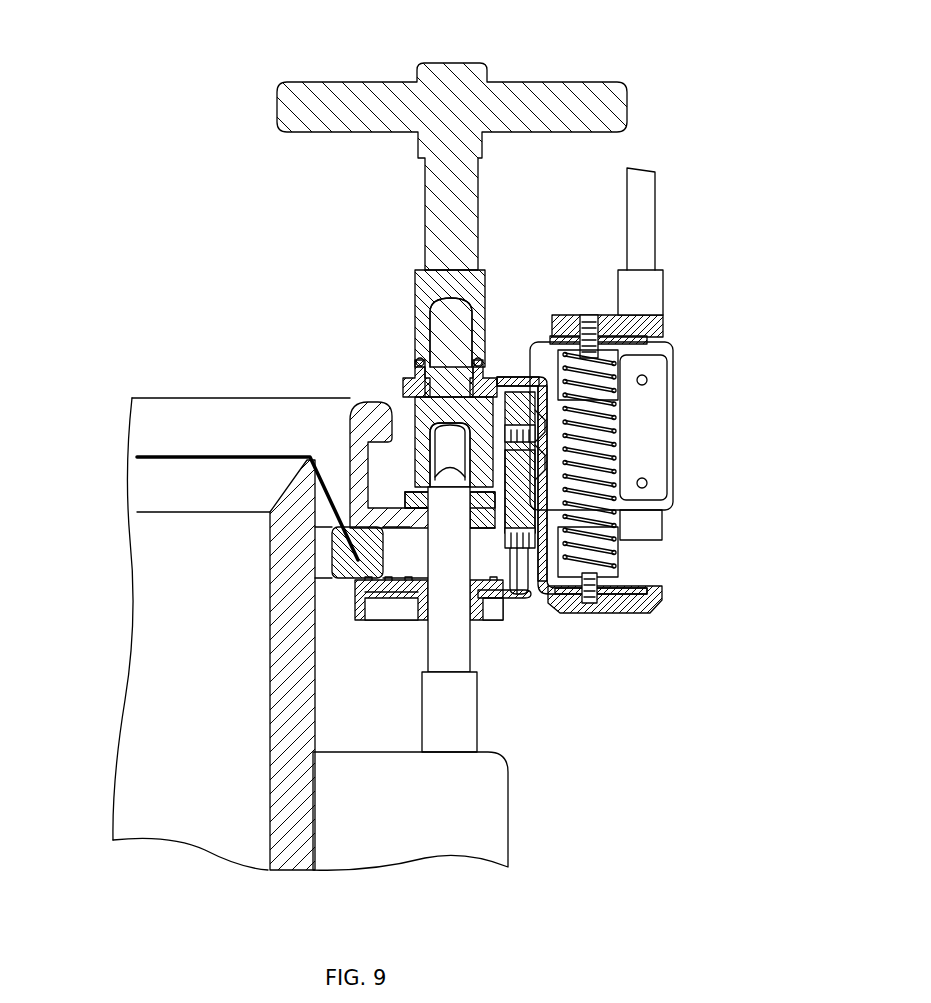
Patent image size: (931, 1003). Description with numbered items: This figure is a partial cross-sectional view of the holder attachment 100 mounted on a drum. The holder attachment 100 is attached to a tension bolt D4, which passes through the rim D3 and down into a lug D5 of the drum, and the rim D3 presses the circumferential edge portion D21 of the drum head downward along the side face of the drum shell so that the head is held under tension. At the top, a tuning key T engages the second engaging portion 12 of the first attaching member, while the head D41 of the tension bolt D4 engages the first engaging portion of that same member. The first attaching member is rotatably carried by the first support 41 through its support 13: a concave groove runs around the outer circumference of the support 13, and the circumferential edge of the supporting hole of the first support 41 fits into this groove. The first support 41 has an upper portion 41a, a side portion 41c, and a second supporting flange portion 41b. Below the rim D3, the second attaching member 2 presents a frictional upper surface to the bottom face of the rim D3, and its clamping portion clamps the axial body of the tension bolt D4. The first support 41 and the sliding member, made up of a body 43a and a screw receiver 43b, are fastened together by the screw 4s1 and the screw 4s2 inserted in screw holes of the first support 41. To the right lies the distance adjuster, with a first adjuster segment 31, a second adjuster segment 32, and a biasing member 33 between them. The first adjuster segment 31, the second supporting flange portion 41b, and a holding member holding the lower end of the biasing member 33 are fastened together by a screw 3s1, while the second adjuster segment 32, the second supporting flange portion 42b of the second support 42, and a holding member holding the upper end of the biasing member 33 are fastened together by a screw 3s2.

The holder attachment 100 is at (162, 68).
The tuning key T is at (307, 85).
The second engaging portion 12 is at (445, 312).
The support 13 is at (408, 372).
The upper plate portion of bracket 41 41a is at (405, 378).
The second supporting flange portion 41b is at (655, 586).
The side wall portion of bracket 41 41c is at (545, 462).
The first support 41 is at (511, 445).
The housing 42 is at (658, 437).
The second supporting flange portion 42b is at (655, 340).
The screw 3s2 is at (589, 325).
The screw 3s1 is at (590, 604).
The second adjuster segment 32 is at (662, 318).
The first adjuster segment 31 is at (660, 612).
The biasing member 33 is at (600, 446).
The screw 4s1 is at (540, 435).
The screw 4s2 is at (540, 540).
The body 43a is at (518, 563).
The screw receiver 43b is at (508, 567).
The second attaching member 2 is at (387, 620).
The rim D3 is at (172, 412).
The tension bolt D4 is at (463, 647).
The lug D5 is at (485, 803).
The circumferential edge portion D21 is at (342, 575).
The head D41 is at (445, 456).